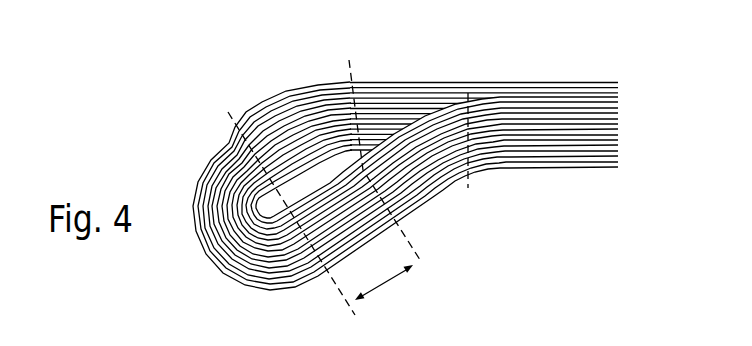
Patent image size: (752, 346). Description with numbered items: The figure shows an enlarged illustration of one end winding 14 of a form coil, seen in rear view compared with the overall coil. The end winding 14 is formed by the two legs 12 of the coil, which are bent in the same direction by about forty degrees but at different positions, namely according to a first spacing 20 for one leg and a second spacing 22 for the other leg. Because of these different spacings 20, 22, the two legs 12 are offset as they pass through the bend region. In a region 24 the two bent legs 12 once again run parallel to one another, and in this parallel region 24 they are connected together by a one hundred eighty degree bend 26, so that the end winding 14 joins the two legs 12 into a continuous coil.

The legs 12 is at (602, 87).
The end winding 14 is at (388, 151).
The spacing 20 is at (472, 172).
The spacing 22 is at (351, 95).
The region 24 is at (400, 276).
The 180 degree bend 26 is at (208, 255).